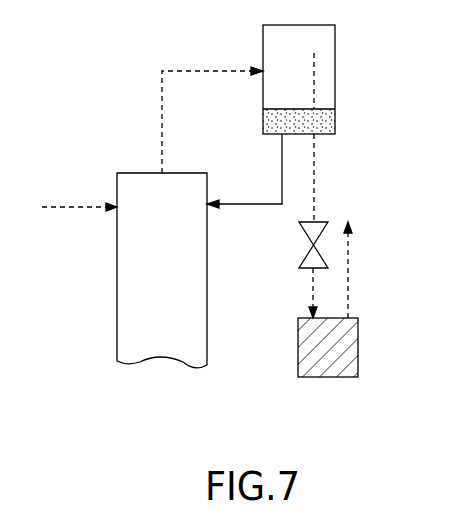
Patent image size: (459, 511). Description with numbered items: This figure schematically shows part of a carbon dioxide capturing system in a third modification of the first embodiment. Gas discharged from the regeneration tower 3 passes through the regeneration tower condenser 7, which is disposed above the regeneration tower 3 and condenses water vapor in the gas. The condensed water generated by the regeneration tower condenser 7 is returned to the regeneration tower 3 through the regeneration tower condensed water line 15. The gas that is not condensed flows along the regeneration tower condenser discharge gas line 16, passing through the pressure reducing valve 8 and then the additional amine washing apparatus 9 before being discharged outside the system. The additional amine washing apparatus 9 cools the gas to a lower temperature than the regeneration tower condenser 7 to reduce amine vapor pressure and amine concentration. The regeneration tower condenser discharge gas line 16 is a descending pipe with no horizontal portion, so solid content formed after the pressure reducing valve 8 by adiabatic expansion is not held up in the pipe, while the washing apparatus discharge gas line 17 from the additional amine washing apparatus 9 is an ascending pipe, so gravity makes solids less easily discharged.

The regeneration tower 3 is at (140, 173).
The regeneration tower condenser 7 is at (263, 28).
The pressure reducing valve 8 is at (309, 246).
The additional amine washing apparatus 9 is at (358, 335).
The regeneration tower condensed water line 15 is at (243, 206).
The regeneration tower condenser discharge gas line 16 is at (316, 172).
The washing apparatus discharge gas line 17 is at (350, 285).